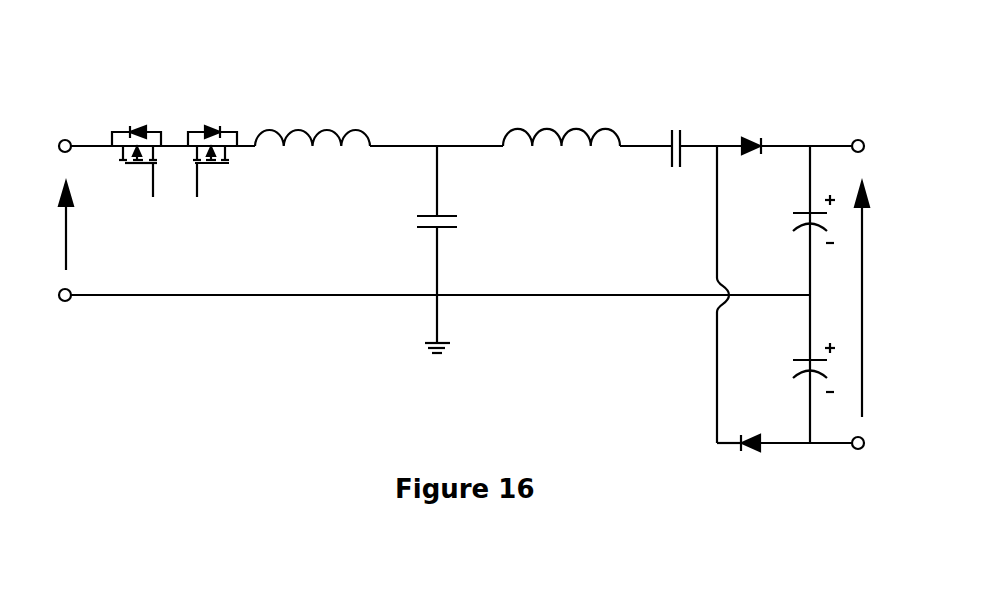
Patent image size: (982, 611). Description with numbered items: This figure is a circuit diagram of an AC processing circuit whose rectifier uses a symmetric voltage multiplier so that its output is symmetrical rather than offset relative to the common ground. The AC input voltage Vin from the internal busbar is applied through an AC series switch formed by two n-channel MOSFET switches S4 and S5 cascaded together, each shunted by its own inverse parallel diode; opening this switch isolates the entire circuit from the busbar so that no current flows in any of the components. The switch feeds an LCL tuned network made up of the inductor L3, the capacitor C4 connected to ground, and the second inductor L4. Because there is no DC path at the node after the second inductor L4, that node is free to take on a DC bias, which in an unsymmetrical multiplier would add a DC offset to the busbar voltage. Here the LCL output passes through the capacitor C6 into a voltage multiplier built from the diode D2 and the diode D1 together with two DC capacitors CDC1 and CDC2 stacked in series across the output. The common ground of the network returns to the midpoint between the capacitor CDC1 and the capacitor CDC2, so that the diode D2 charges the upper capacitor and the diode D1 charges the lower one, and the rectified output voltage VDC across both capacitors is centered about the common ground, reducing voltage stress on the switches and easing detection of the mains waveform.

The n-channel MOSFET switch S4 is at (136, 164).
The n-channel MOSFET switch S5 is at (212, 164).
The inductor L3 is at (312, 122).
The second inductor L4 is at (561, 122).
The capacitor C4 is at (452, 249).
The capacitor C6 is at (676, 134).
The diode D2 is at (755, 128).
The diode D1 is at (752, 426).
The DC capacitor CDC1 is at (785, 219).
The DC capacitor CDC2 is at (785, 367).
The input voltage Vin is at (50, 226).
The DC output voltage VDC is at (877, 299).